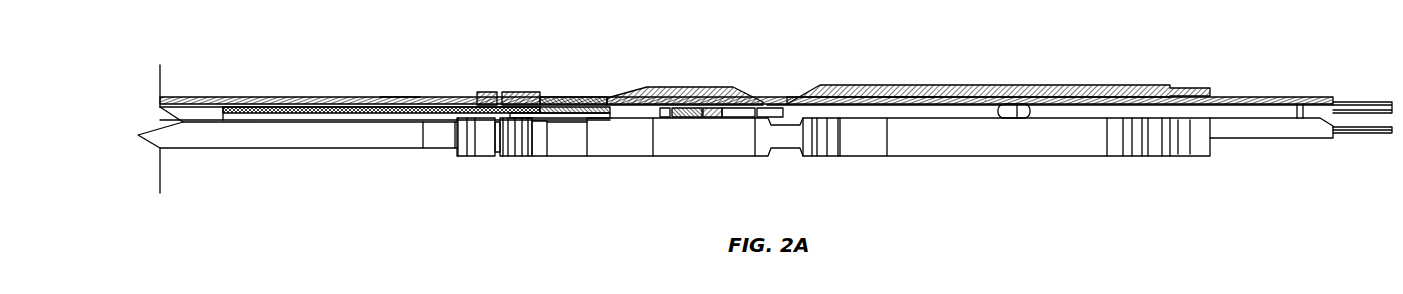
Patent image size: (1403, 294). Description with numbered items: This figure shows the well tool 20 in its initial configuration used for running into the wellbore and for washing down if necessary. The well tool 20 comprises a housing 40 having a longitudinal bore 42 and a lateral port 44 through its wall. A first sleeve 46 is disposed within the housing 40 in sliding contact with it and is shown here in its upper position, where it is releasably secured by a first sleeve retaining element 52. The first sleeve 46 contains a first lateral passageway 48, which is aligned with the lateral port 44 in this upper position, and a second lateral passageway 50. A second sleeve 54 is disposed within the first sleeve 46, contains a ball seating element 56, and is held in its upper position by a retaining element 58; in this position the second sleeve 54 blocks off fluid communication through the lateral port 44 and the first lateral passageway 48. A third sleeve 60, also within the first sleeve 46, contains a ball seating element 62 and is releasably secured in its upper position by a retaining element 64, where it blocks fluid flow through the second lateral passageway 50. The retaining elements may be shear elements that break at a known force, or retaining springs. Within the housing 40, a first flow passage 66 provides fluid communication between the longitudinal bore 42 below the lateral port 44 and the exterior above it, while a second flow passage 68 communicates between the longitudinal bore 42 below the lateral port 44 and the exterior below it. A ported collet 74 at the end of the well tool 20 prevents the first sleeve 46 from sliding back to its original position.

The well tool 20 is at (360, 85).
The housing 40 is at (622, 90).
The longitudinal bore 42 is at (342, 117).
The lateral port 44 is at (775, 82).
The first sleeve 46 is at (257, 102).
The first lateral passageway 48 is at (773, 102).
The second lateral passageway 50 is at (528, 88).
The first sleeve retaining element 52 is at (397, 85).
The second sleeve 54 is at (720, 100).
The ball seating element 56 is at (713, 118).
The retaining element 58 is at (673, 105).
The third sleeve 60 is at (590, 118).
The ball seating element 62 is at (502, 87).
The retaining element 64 is at (562, 112).
The first flow passage 66 is at (568, 98).
The second flow passage 68 is at (1017, 102).
The ported collet 74 is at (1338, 97).